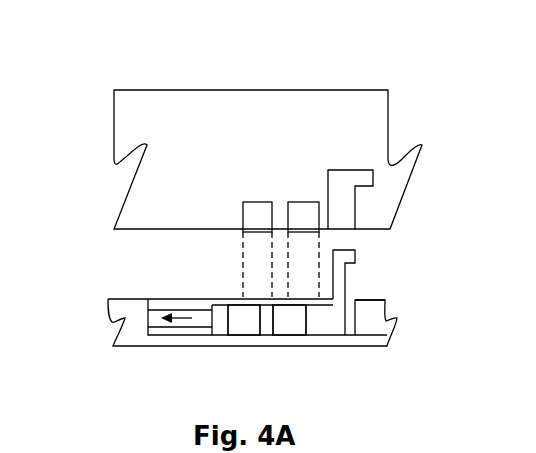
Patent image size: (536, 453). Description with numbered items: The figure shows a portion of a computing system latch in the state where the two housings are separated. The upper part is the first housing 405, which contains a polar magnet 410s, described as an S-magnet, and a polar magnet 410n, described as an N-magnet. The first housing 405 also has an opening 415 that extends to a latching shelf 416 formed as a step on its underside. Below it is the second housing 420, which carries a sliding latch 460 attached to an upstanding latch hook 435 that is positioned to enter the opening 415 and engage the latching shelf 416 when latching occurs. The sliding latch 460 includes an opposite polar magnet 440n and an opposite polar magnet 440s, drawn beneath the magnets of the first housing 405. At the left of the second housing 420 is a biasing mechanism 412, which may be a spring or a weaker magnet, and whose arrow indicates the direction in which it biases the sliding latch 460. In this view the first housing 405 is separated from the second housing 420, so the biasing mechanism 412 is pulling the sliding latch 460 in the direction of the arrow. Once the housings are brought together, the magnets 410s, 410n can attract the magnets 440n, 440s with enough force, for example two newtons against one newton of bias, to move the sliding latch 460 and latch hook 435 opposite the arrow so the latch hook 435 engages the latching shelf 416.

The first housing 405 is at (273, 133).
The polar magnet 410s is at (255, 215).
The polar magnet 410n is at (303, 213).
The opening 415 is at (338, 231).
The latching shelf 416 is at (373, 186).
The second housing 420 is at (136, 303).
The biasing mechanism 412 is at (178, 318).
The latch hook 435 is at (356, 254).
The opposite polar magnet 440n is at (242, 325).
The opposite polar magnet 440s is at (288, 325).
The sliding latch 460 is at (328, 323).